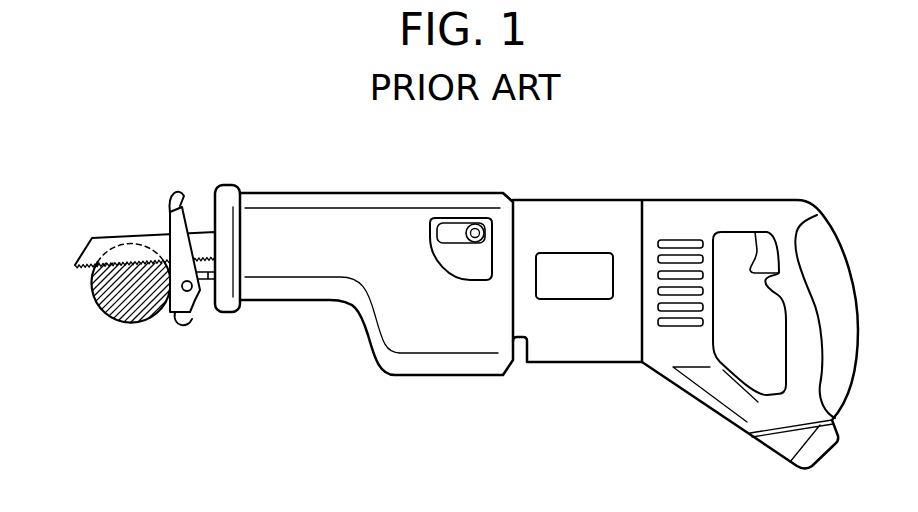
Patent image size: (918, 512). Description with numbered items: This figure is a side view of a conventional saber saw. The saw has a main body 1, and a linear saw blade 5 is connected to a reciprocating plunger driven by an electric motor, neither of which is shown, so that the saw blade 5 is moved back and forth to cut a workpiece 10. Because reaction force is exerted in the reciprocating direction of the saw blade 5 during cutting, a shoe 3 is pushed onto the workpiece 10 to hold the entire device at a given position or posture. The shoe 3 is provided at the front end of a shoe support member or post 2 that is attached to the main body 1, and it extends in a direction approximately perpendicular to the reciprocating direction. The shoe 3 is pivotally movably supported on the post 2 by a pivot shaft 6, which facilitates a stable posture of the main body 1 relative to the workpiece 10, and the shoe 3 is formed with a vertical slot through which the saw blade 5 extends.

The main body 1 is at (387, 222).
The post 2 is at (207, 282).
The shoe 3 is at (170, 223).
The saw blade 5 is at (112, 241).
The pivot shaft 6 is at (192, 293).
The workpiece 10 is at (124, 323).